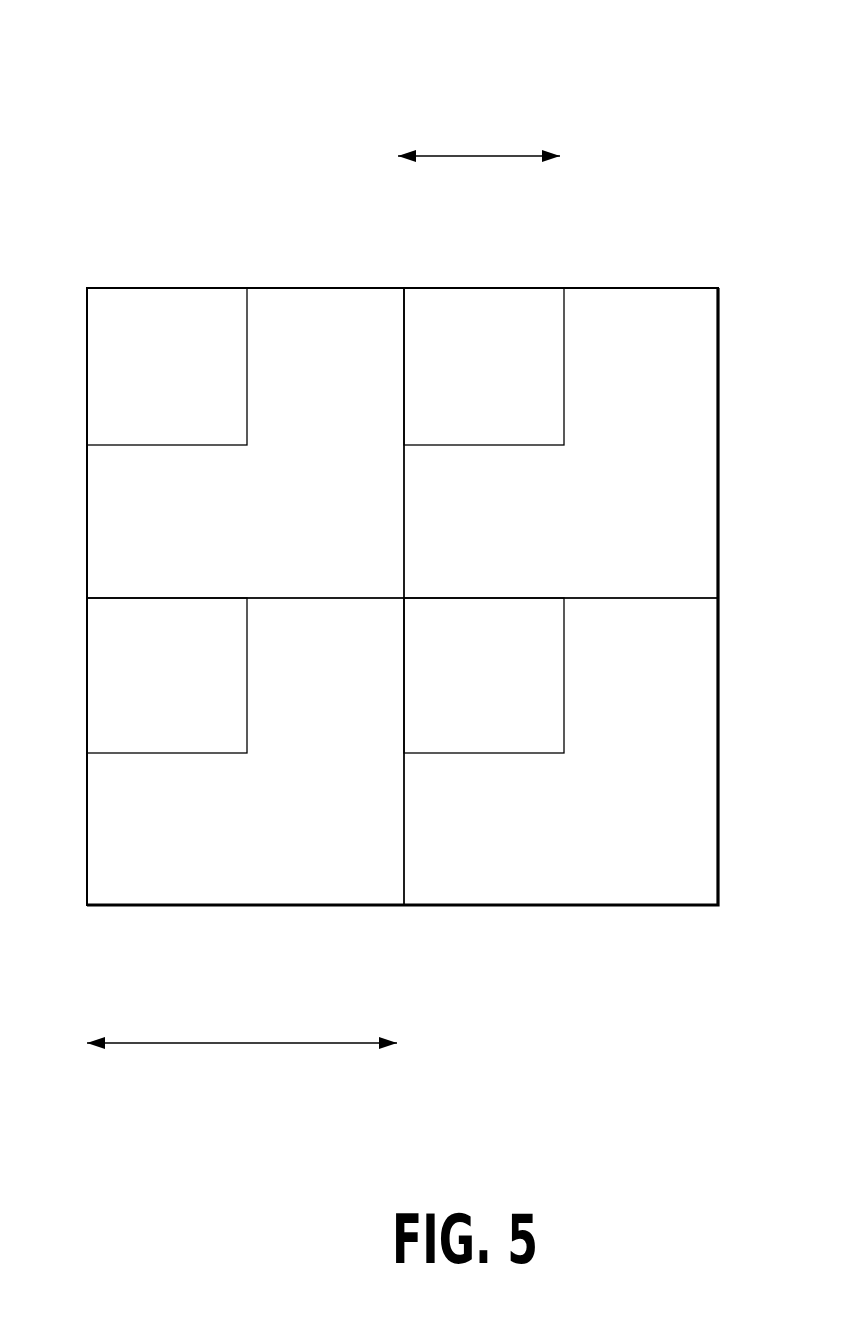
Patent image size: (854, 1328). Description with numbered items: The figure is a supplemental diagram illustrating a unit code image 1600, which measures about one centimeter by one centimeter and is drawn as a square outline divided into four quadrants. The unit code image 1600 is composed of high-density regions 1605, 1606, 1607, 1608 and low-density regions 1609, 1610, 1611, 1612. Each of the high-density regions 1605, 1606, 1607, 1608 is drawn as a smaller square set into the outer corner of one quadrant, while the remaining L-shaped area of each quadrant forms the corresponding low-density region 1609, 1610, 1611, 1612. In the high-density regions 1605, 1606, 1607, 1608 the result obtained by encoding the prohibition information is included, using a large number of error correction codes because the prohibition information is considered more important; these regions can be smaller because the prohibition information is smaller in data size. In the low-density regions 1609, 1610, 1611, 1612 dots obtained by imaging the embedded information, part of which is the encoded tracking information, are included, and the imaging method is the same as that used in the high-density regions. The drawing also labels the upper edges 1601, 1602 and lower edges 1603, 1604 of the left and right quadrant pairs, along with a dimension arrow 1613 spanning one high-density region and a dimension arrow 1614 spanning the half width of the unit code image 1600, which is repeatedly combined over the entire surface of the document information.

The unit code image 1600 is at (606, 114).
The first light receiving region 1601 is at (260, 288).
The second light receiving region 1602 is at (586, 288).
The third light receiving region 1603 is at (222, 905).
The fourth light receiving region 1604 is at (527, 905).
The high-density region 1605 is at (148, 288).
The high-density region 1606 is at (457, 288).
The high-density region 1607 is at (172, 753).
The high-density region 1608 is at (497, 753).
The low-density region 1609 is at (342, 305).
The low-density region 1610 is at (669, 300).
The low-density region 1611 is at (340, 888).
The low-density region 1612 is at (645, 888).
The width of opening 1613 is at (479, 140).
The pixel pitch 1614 is at (242, 1060).